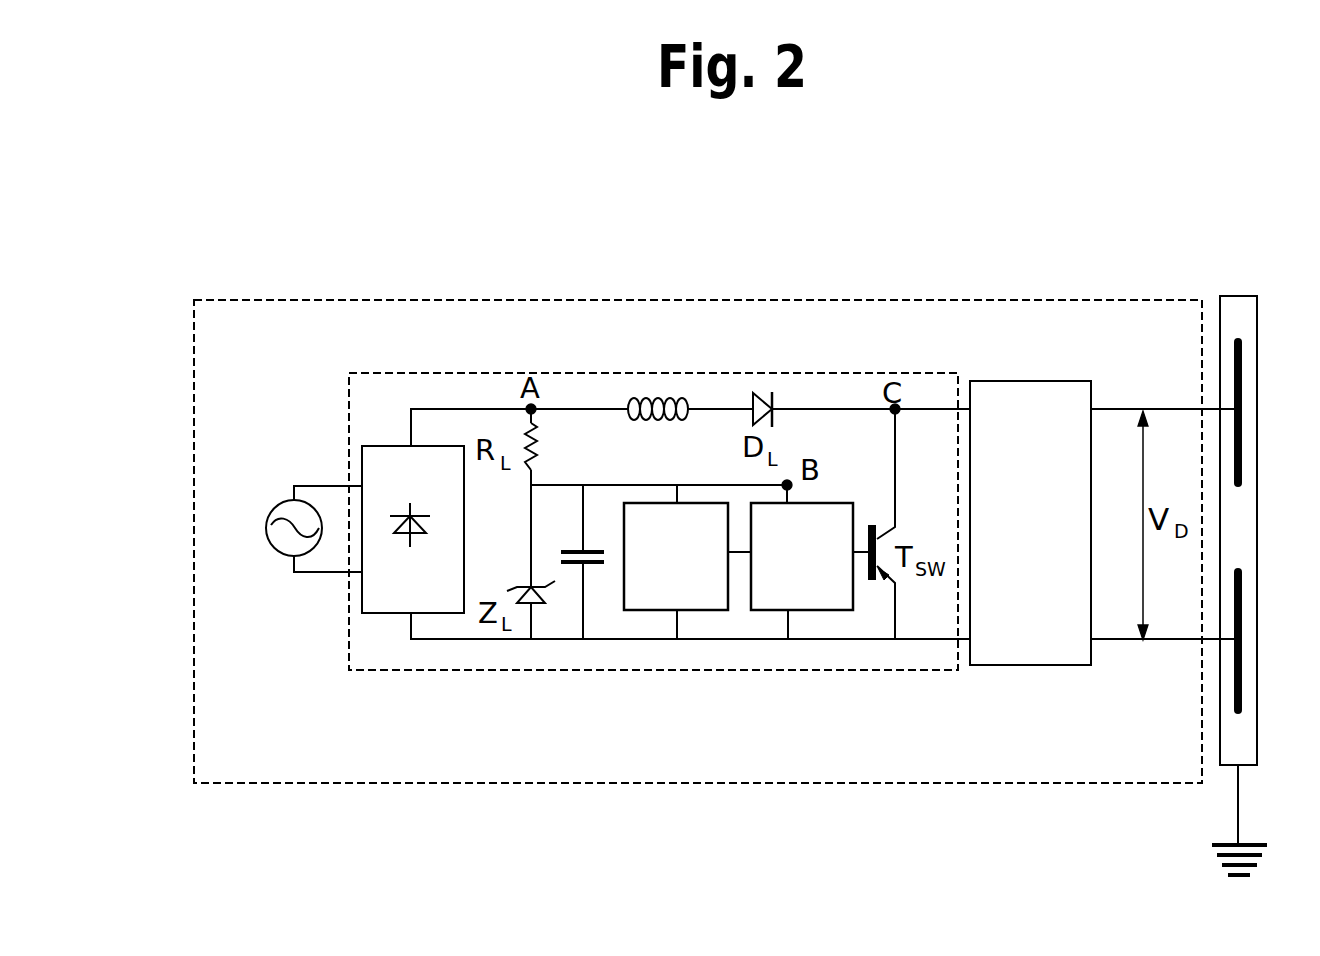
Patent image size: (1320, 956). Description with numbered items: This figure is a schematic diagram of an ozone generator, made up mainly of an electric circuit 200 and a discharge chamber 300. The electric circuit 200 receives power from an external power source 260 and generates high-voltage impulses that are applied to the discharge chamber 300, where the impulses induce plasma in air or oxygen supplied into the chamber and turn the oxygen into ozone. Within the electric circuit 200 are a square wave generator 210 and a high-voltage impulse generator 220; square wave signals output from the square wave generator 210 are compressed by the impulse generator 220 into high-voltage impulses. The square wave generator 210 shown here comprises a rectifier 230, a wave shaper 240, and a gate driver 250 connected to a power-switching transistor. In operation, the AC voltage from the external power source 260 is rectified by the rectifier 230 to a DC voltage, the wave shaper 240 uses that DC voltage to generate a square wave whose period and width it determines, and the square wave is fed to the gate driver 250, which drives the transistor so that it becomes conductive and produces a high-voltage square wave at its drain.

The electric circuit 200 is at (752, 300).
The square wave generator 210 is at (613, 373).
The high-voltage impulse generator 220 is at (1027, 647).
The rectifier 230 is at (383, 600).
The wave shaper 240 is at (652, 602).
The gate driver 250 is at (818, 600).
The external power source 260 is at (270, 536).
The discharge chamber 300 is at (1239, 312).